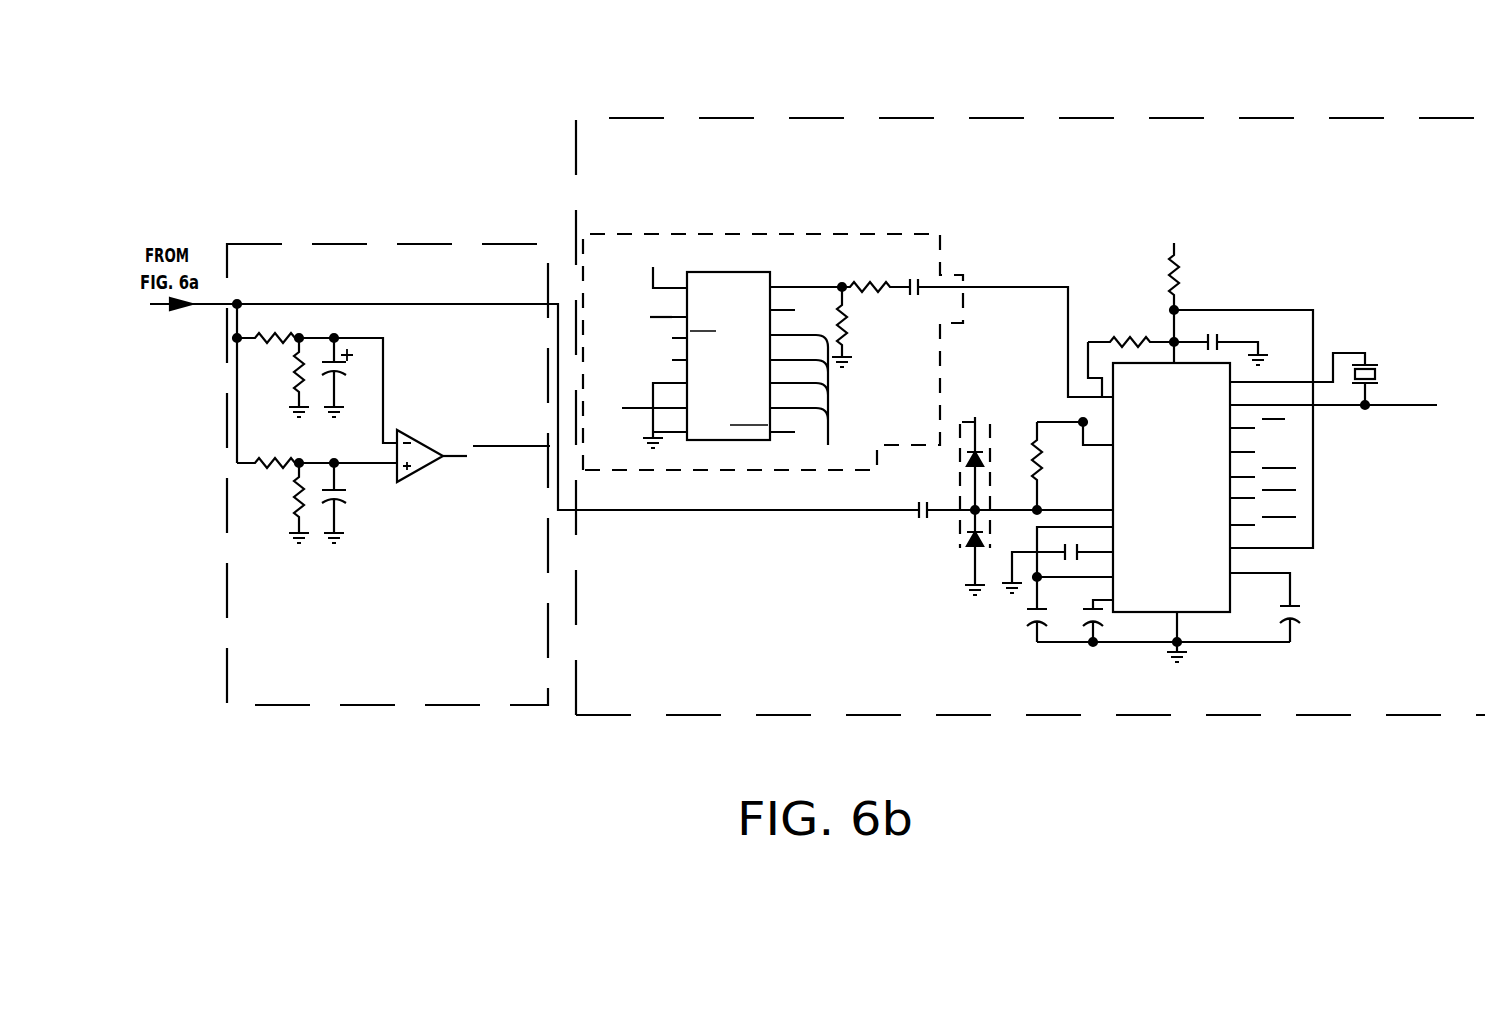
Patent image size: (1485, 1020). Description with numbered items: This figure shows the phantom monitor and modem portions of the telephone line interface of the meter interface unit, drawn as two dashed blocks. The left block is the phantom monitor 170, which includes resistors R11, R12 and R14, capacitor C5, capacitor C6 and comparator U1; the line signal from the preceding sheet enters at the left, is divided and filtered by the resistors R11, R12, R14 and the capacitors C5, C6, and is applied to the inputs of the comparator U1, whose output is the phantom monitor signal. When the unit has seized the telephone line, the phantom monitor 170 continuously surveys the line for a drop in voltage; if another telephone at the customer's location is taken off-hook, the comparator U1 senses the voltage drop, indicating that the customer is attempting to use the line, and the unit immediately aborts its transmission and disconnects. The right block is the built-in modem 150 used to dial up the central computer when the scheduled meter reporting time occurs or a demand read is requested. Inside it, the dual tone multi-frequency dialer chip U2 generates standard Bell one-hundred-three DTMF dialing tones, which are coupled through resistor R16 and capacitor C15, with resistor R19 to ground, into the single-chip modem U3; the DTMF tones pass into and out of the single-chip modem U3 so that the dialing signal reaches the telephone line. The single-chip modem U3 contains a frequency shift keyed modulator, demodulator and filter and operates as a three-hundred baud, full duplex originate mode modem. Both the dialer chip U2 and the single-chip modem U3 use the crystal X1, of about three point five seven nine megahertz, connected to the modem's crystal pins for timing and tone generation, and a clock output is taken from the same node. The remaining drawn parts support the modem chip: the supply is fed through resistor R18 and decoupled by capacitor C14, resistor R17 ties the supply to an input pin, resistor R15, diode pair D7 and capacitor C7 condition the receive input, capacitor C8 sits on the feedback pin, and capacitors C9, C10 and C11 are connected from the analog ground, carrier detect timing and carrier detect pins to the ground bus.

The modem 150 is at (890, 117).
The phantom monitor 170 is at (393, 243).
The comparator U1 is at (432, 466).
The dual tone multi-frequency (DTMF) dialer chip U2 is at (747, 346).
The single-chip modem U3 is at (1215, 612).
The resistor R11 is at (268, 329).
The resistor R12 is at (287, 377).
The resistor R14 is at (273, 500).
The resistor R15 is at (1050, 466).
The resistor R16 is at (876, 275).
The resistor R17 is at (1131, 319).
The resistor R18 is at (1189, 276).
The resistor R19 is at (855, 327).
The capacitor C5 is at (347, 377).
The capacitor C6 is at (346, 503).
The capacitor C7 is at (925, 497).
The capacitor C8 is at (1060, 545).
The capacitor C9 is at (1032, 609).
The capacitor C10 is at (1085, 613).
The capacitor C11 is at (1274, 607).
The capacitor C14 is at (1221, 339).
The capacitor C15 is at (911, 276).
The diode pair D7 is at (985, 493).
The crystal X1 is at (1374, 361).